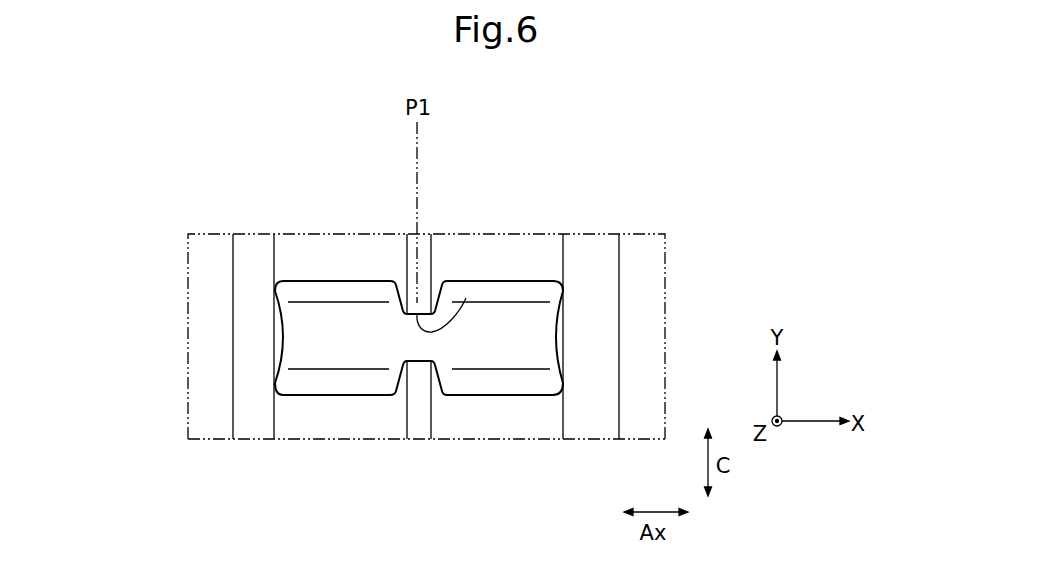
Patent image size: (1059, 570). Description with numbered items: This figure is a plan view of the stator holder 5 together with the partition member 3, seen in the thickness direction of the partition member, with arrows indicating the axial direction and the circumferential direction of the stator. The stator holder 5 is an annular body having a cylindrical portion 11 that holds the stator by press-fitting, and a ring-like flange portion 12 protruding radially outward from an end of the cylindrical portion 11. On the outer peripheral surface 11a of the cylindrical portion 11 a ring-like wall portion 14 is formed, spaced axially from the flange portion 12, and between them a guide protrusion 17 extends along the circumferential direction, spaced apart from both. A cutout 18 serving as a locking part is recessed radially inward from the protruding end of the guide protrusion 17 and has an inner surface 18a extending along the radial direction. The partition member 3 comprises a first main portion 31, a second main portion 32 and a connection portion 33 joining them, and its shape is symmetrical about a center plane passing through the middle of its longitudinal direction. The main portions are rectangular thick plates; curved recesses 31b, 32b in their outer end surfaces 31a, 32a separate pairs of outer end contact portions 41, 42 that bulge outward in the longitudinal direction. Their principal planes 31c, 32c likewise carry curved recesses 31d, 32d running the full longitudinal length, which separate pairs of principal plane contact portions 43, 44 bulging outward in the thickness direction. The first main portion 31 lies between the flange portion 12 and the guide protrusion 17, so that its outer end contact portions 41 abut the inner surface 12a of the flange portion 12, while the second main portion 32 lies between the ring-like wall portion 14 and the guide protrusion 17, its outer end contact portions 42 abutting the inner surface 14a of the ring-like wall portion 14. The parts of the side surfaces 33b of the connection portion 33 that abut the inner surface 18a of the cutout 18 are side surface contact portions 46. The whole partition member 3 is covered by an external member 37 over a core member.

The partition member 3 is at (419, 325).
The stator holder 5 is at (225, 265).
The cylindrical portion 11 is at (426, 480).
The outer peripheral surface 11a is at (387, 425).
The flange portion 12 is at (253, 252).
The inner surface of the flange portion 12a is at (275, 418).
The ring-like wall portion 14 is at (600, 242).
The inner surface of the ring-like wall portion 14a is at (561, 416).
The guide protrusion 17 is at (424, 240).
The cutout 18 is at (437, 273).
The inner surface of the cutout 18a is at (466, 298).
The first main portion 31 is at (217, 329).
The outer end surface of the first main portion 31a is at (171, 337).
The recess 31b is at (280, 342).
The principal plane 31c is at (217, 306).
The recess 31d is at (313, 322).
The second main portion 32 is at (621, 325).
The outer end surface of the second main portion 32a is at (668, 337).
The recess 32b is at (557, 322).
The principal plane 32c is at (623, 286).
The recess 32d is at (528, 315).
The connection portion 33 is at (421, 347).
The side surface of the connection portion 33b is at (405, 331).
The external member 37 is at (544, 280).
The outer end contact portion 41 is at (275, 293).
The outer end contact portion 42 is at (565, 293).
The principal plane contact portion 43 is at (325, 291).
The principal plane contact portion 44 is at (532, 292).
The side surface contact portion 46 is at (393, 305).